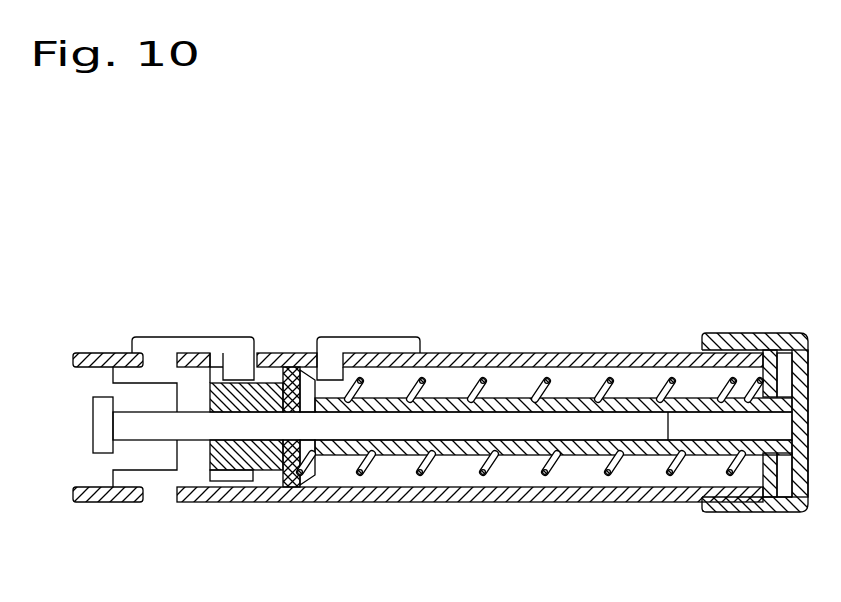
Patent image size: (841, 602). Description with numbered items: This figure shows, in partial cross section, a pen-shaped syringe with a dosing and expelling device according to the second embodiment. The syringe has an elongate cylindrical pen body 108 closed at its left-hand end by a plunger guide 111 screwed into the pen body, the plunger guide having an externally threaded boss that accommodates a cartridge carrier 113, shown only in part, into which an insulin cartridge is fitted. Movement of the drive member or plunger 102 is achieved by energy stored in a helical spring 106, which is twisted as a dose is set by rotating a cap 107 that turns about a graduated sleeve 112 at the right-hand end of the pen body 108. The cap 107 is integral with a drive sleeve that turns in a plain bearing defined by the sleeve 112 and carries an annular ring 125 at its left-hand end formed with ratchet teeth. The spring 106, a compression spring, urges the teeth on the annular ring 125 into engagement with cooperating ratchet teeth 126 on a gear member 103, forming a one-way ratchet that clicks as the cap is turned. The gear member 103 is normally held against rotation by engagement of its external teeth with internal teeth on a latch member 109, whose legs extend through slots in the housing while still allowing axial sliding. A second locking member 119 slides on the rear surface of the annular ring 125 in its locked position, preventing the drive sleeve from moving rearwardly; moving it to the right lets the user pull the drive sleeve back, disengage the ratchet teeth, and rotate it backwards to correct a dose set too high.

The drive member 102 is at (510, 427).
The gear member 103 is at (268, 352).
The helical spring 106 is at (607, 398).
The cap 107 is at (773, 335).
The pen body 108 is at (460, 352).
The latch member 109 is at (211, 352).
The plunger guide 111 is at (155, 367).
The graduated sleeve 112 is at (675, 353).
The cartridge carrier 113 is at (90, 352).
The locking member 119 is at (358, 340).
The annular ring 125 is at (305, 348).
The ratchet teeth 126 is at (262, 487).